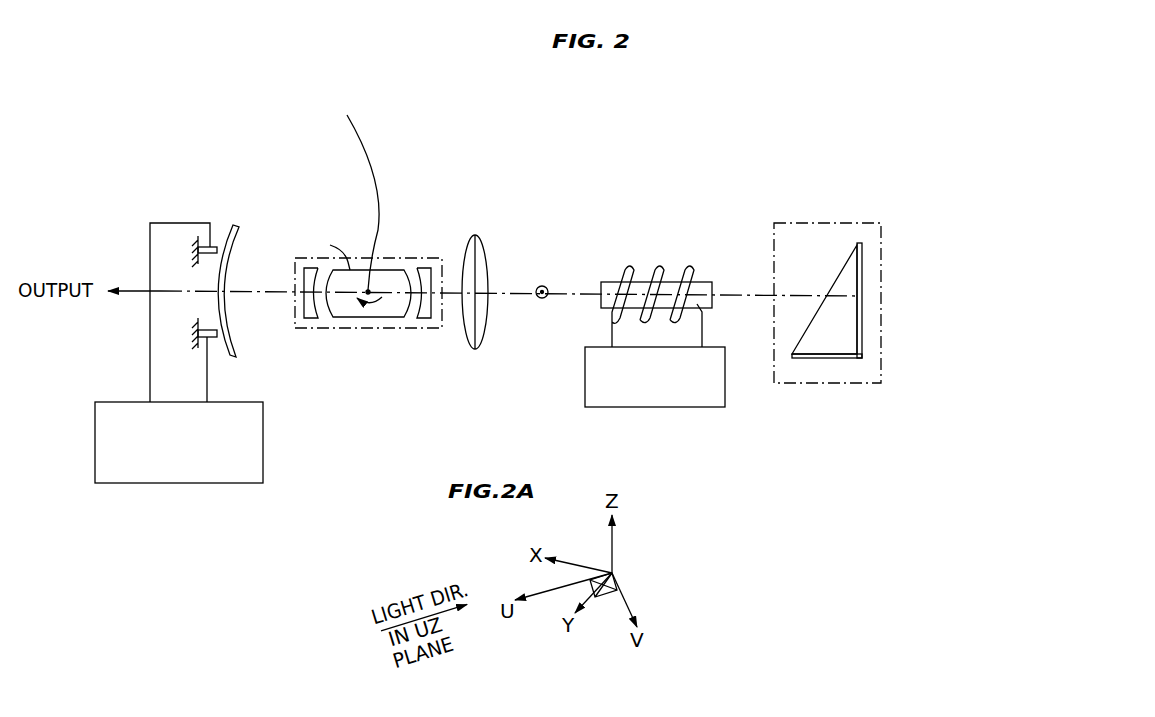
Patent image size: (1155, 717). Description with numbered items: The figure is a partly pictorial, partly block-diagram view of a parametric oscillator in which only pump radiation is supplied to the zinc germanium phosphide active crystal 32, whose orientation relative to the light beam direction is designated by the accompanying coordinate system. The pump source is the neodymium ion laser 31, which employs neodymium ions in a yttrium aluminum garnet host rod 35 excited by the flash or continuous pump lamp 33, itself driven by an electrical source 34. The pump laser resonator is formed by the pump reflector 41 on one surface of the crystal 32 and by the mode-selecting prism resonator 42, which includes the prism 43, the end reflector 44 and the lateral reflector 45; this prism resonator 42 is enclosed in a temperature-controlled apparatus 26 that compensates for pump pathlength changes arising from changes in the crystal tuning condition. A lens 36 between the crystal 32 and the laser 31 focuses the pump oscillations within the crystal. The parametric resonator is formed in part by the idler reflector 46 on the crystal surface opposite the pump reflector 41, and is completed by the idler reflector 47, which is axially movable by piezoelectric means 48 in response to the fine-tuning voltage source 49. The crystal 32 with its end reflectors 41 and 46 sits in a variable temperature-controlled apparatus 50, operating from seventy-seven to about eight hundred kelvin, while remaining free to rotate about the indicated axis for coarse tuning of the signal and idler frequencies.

The temperature-controlled apparatus 26 is at (872, 383).
The neodymium ion laser 31 is at (712, 246).
The zinc germanium phosphide active crystal 32 is at (370, 306).
The pump lamp 33 is at (606, 336).
The electrical source 34 is at (652, 407).
The yttrium aluminum garnet host rod 35 is at (705, 300).
The lens 36 is at (487, 330).
The pump reflector 41 is at (303, 303).
The mode-selecting prism resonator 42 is at (838, 265).
The prism 43 is at (822, 340).
The end reflector 44 is at (862, 262).
The lateral reflector 45 is at (843, 360).
The idler reflector 46 is at (431, 312).
The idler reflector 47 is at (231, 230).
The piezoelectric means 48 is at (207, 325).
The fine-tuning voltage source 49 is at (180, 483).
The variable temperature-controlled apparatus 50 is at (398, 257).